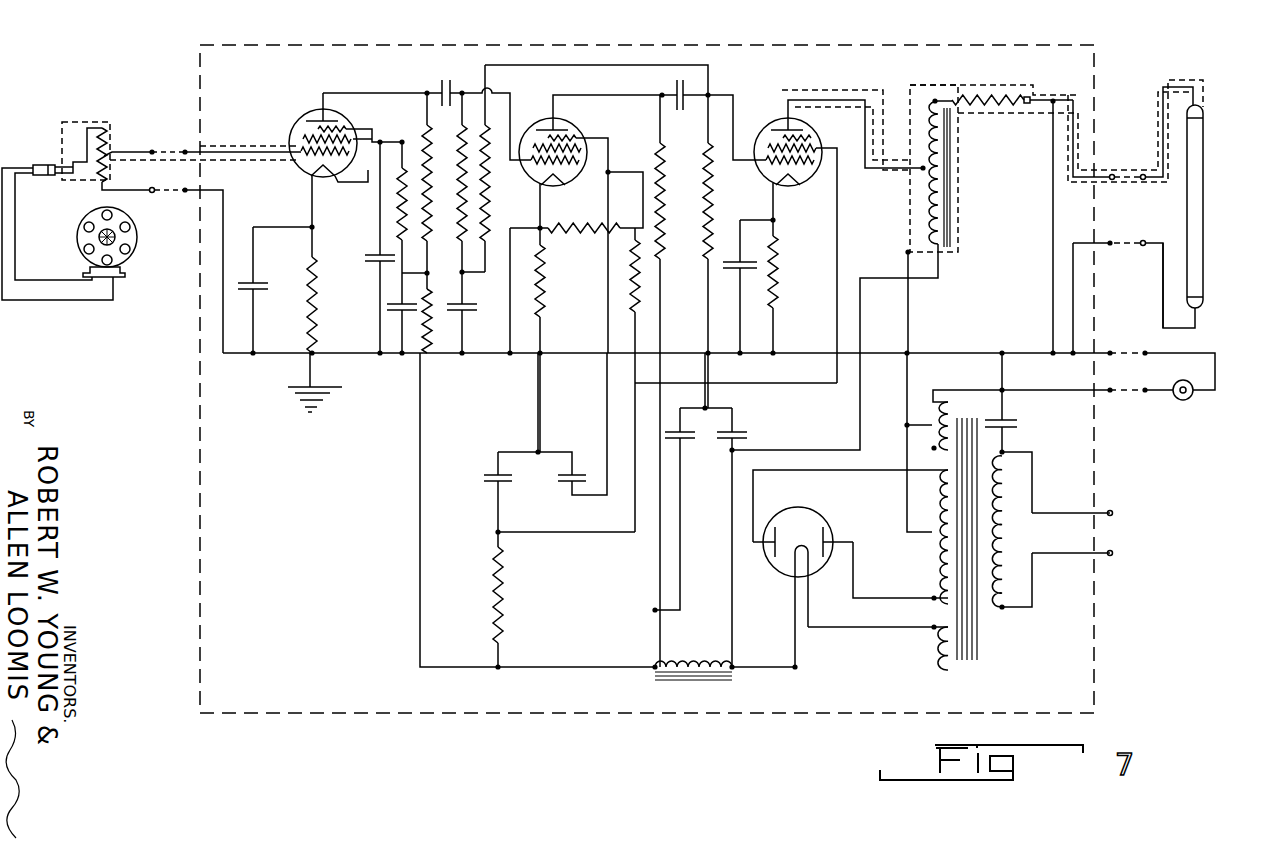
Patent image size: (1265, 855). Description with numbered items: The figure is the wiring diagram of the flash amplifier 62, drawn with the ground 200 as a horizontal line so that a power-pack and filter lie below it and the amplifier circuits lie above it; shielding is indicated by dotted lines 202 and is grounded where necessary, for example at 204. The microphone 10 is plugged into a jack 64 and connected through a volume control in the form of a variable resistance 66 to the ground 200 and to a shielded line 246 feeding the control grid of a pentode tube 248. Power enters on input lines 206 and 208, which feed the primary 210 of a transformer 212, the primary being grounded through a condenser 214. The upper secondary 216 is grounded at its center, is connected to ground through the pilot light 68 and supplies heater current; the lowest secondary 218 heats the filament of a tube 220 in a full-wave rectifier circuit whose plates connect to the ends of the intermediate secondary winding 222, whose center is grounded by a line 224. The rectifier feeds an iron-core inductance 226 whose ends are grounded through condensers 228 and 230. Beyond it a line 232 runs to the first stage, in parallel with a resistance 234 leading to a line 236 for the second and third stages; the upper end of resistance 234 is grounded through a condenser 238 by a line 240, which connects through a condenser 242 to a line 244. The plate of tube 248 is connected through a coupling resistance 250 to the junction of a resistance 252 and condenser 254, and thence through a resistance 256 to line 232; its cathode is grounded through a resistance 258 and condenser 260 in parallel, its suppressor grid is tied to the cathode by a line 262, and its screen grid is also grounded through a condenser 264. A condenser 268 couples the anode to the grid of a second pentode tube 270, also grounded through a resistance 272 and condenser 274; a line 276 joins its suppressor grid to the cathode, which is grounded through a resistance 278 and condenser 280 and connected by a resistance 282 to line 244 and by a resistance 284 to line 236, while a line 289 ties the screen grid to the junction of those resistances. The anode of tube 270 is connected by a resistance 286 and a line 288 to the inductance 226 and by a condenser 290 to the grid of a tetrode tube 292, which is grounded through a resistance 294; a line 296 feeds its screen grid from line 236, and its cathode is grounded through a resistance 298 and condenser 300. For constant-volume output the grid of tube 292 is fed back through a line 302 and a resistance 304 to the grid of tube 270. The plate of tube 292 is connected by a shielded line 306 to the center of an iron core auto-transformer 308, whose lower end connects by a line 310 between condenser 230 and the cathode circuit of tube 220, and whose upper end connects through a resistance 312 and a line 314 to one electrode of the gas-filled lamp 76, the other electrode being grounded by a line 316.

The microphone 10 is at (137, 240).
The flash amplifier 62 is at (1027, 53).
The jack 64 is at (75, 162).
The variable resistance 66 is at (112, 135).
The pilot light 68 is at (1193, 384).
The gas-filled lamp 76 is at (1195, 223).
The ground 200 is at (927, 353).
The shielding 202 is at (222, 146).
The shield ground connection 204 is at (1053, 218).
The input line 206 is at (1065, 512).
The input line 208 is at (1063, 555).
The primary 210 is at (997, 492).
The transformer 212 is at (963, 455).
The condenser 214 is at (1000, 420).
The upper secondary 216 is at (933, 390).
The lowest secondary 218 is at (930, 667).
The tube 220 is at (798, 515).
The intermediate secondary winding 222 is at (940, 557).
The line 224 is at (905, 388).
The iron-core inductance 226 is at (684, 676).
The condenser 228 is at (683, 442).
The condenser 230 is at (737, 428).
The line 232 is at (420, 533).
The resistance 234 is at (497, 610).
The line 236 is at (593, 532).
The condenser 238 is at (490, 477).
The line 240 is at (510, 450).
The condenser 242 is at (567, 482).
The line 244 is at (605, 408).
The shielded line 246 is at (225, 163).
The pentode tube 248 is at (300, 118).
The plate load or coupling resistance 250 is at (423, 143).
The resistance 252 is at (398, 205).
The condenser 254 is at (384, 310).
The resistance 256 is at (427, 347).
The resistance 258 is at (305, 305).
The condenser 260 is at (245, 287).
The line 262 is at (352, 183).
The condenser 264 is at (370, 260).
The condenser 268 is at (446, 76).
The pentode tube 270 is at (532, 113).
The resistance 272 is at (462, 212).
The condenser 274 is at (462, 313).
The line 276 is at (609, 150).
The resistance 278 is at (538, 297).
The condenser 280 is at (510, 293).
The resistance 282 is at (556, 226).
The resistance 284 is at (635, 227).
The resistance 286 is at (672, 215).
The line 288 is at (668, 313).
The line 289 is at (632, 159).
The condenser 290 is at (687, 96).
The tetrode tube 292 is at (762, 140).
The resistance 294 is at (703, 178).
The line 296 is at (833, 228).
The resistance 298 is at (768, 298).
The condenser 300 is at (775, 220).
The line 302 is at (638, 65).
The resistance 304 is at (483, 222).
The shielded line 306 is at (810, 90).
The iron core auto-transformer 308 is at (937, 195).
The line 310 is at (872, 278).
The resistance 312 is at (985, 93).
The line 314 is at (1077, 138).
The line 316 is at (1163, 305).